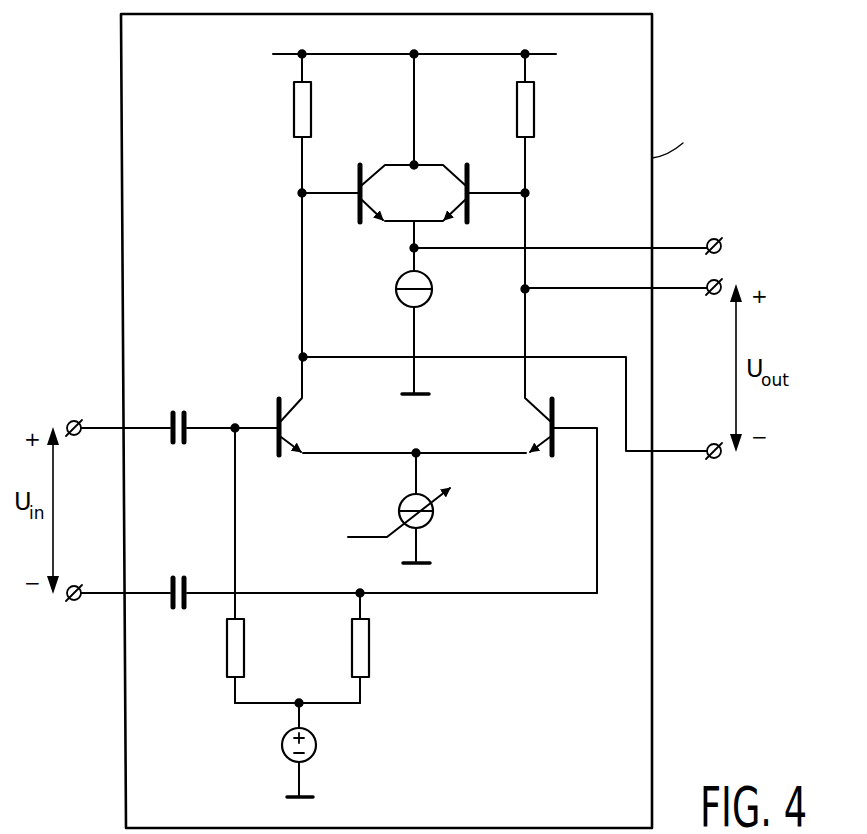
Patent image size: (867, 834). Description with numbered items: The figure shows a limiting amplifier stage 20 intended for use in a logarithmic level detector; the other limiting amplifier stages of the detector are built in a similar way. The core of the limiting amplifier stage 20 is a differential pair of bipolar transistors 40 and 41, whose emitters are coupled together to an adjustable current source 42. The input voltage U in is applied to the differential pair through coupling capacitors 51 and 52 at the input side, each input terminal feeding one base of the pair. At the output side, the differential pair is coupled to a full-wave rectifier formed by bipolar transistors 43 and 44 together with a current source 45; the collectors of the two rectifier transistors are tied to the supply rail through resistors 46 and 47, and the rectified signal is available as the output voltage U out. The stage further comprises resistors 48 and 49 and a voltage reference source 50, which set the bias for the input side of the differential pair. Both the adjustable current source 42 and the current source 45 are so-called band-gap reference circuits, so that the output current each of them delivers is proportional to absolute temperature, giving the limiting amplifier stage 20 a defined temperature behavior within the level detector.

The limiting amplifier stage 20 is at (652, 78).
The bipolar transistor 40 is at (290, 423).
The bipolar transistor 41 is at (535, 423).
The adjustable current source 42 is at (434, 517).
The bipolar transistor 43 is at (357, 213).
The bipolar transistor 44 is at (470, 213).
The current source 45 is at (394, 282).
The resistor 46 is at (294, 104).
The resistor 47 is at (535, 106).
The resistor 48 is at (226, 660).
The resistor 49 is at (371, 660).
The voltage reference source 50 is at (317, 745).
The coupling capacitor 51 is at (177, 412).
The coupling capacitor 52 is at (178, 577).